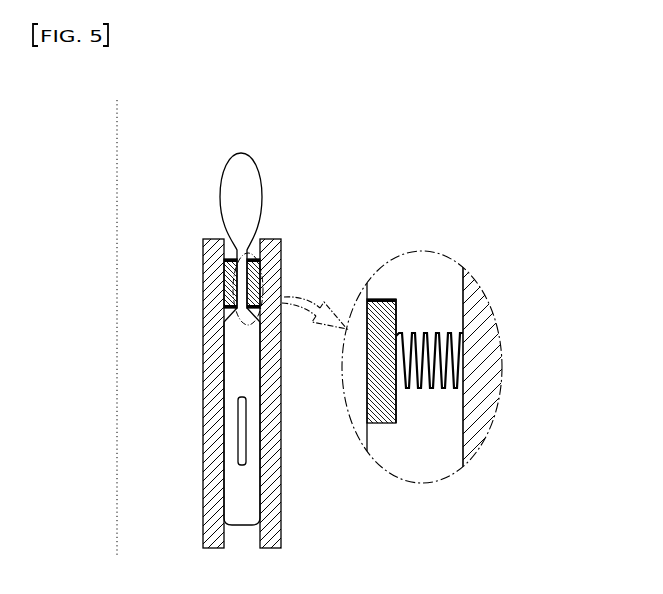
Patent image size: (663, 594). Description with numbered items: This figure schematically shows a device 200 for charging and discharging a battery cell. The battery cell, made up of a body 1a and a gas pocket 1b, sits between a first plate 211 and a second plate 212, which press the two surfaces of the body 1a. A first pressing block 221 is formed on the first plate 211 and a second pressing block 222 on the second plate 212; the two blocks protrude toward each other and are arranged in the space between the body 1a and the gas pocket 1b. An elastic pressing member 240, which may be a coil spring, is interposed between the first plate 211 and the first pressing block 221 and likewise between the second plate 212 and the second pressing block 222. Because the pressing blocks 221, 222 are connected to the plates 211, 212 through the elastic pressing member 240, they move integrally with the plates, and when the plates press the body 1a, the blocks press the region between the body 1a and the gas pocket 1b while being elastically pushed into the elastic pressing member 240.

The device for charging and discharging a battery cell 200 is at (172, 128).
The body 1a is at (230, 349).
The gas pocket 1b is at (263, 216).
The first plate 211 is at (203, 488).
The second plate 212 is at (282, 469).
The first pressing block 221 is at (228, 290).
The second pressing block 222 is at (257, 278).
The elastic pressing member 240 is at (430, 333).